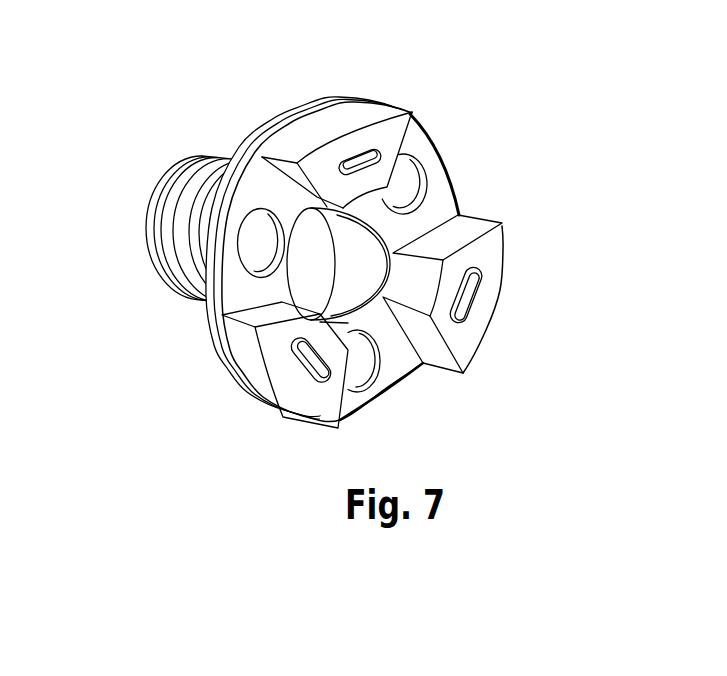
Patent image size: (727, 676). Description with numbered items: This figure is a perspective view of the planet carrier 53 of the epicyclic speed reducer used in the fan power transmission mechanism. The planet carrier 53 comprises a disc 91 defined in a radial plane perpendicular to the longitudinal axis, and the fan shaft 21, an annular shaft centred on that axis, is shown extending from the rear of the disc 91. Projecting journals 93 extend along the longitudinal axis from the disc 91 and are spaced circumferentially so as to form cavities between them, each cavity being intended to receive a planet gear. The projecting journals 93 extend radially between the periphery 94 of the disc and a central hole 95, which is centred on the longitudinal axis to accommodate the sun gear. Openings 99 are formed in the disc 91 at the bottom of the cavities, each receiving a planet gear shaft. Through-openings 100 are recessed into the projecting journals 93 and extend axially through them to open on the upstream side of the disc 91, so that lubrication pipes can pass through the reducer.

The fan shaft 21 is at (196, 168).
The planet carrier 53 is at (492, 206).
The disc 91 is at (437, 183).
The projecting journals 93 is at (487, 253).
The periphery 94 is at (440, 143).
The central hole 95 is at (303, 273).
The opening 99 is at (262, 232).
The through-openings 100 is at (365, 163).